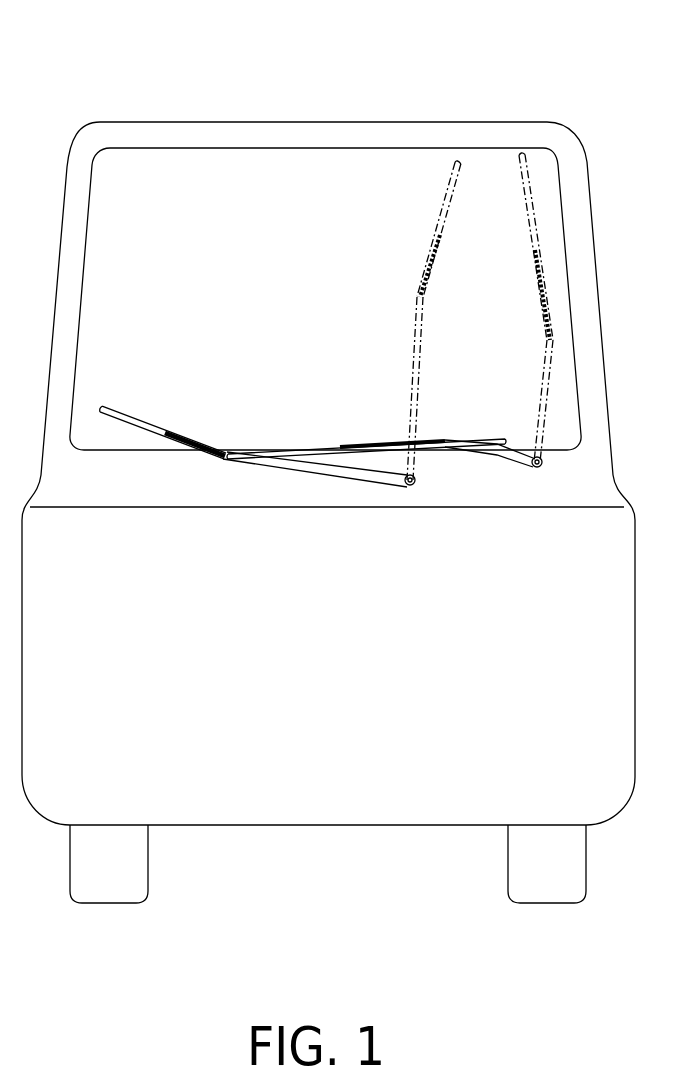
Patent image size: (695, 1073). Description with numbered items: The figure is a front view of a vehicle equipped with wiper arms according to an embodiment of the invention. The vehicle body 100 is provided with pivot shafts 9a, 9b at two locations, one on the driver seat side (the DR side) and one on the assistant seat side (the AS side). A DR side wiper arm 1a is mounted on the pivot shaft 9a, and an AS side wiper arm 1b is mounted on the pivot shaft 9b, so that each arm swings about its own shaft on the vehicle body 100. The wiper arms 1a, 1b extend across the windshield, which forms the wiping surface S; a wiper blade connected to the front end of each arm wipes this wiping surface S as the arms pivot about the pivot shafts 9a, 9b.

The vehicle body 100 is at (539, 116).
The wiping surface S is at (334, 313).
The DR side wiper arm 1a is at (470, 433).
The AS side wiper arm 1b is at (148, 416).
The pivot shaft 9a is at (537, 468).
The pivot shaft 9b is at (410, 486).